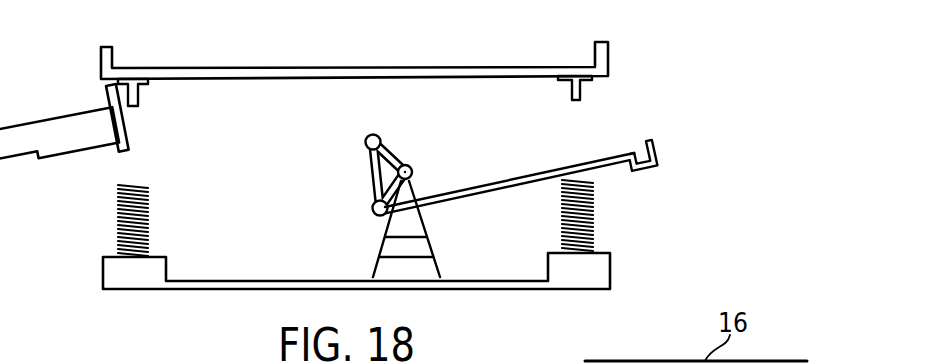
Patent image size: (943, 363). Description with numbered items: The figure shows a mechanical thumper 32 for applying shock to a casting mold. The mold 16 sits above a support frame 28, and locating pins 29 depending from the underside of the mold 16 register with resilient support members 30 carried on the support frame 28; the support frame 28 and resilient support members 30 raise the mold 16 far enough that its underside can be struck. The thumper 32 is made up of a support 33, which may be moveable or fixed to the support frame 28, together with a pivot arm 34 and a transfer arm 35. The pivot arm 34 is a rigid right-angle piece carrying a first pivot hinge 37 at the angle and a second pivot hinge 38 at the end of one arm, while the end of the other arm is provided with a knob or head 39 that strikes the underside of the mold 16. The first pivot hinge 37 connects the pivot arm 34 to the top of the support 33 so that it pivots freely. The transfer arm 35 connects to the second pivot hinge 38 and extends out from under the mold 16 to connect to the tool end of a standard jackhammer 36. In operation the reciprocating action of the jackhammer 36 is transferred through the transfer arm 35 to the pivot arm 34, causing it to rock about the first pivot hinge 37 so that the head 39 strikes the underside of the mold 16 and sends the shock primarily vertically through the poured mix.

The mold 16 is at (363, 67).
The support frame 28 is at (611, 265).
The locating pin 29 is at (129, 96).
The resilient support member 30 is at (118, 240).
The mechanical thumper 32 is at (292, 177).
The support 33 is at (378, 257).
The pivot arm 34 is at (383, 165).
The transfer arm 35 is at (600, 168).
The jackhammer 36 is at (818, 138).
The first pivot hinge 37 is at (412, 172).
The second pivot hinge 38 is at (372, 210).
The knob or head 39 is at (365, 145).